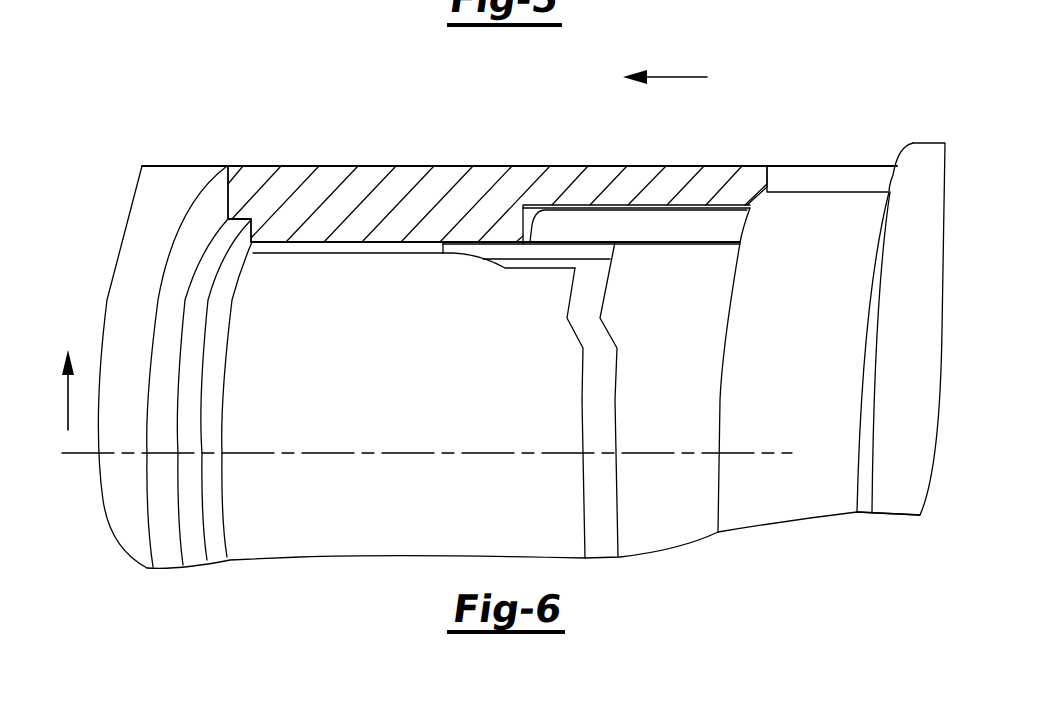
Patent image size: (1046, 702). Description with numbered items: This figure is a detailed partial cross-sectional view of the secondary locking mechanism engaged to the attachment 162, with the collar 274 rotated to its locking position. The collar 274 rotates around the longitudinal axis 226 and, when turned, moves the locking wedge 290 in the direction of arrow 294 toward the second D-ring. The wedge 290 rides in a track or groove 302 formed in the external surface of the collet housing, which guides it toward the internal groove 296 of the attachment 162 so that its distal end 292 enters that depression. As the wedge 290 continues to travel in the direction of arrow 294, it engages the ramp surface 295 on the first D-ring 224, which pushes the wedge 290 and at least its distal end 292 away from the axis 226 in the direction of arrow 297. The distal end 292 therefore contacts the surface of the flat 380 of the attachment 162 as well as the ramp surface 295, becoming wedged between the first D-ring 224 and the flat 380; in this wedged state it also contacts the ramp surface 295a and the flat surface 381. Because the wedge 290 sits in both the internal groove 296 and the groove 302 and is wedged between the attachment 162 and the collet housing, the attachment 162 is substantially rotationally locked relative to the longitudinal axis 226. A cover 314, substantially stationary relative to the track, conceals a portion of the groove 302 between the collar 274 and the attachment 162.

The attachment 162 is at (313, 160).
The first D-ring 224 is at (302, 540).
The longitudinal axis 226 is at (327, 452).
The collar 274 is at (927, 147).
The locking wedge 290 is at (567, 228).
The distal end 292 is at (503, 240).
The arrow 294 is at (665, 75).
The ramp surface 295 is at (490, 259).
The ramp surface 295a is at (462, 256).
The internal groove 296 is at (535, 219).
The arrow 297 is at (63, 382).
The groove 302 is at (707, 243).
The cover 314 is at (837, 177).
The flat 380 is at (409, 178).
The flat surface 381 is at (456, 241).